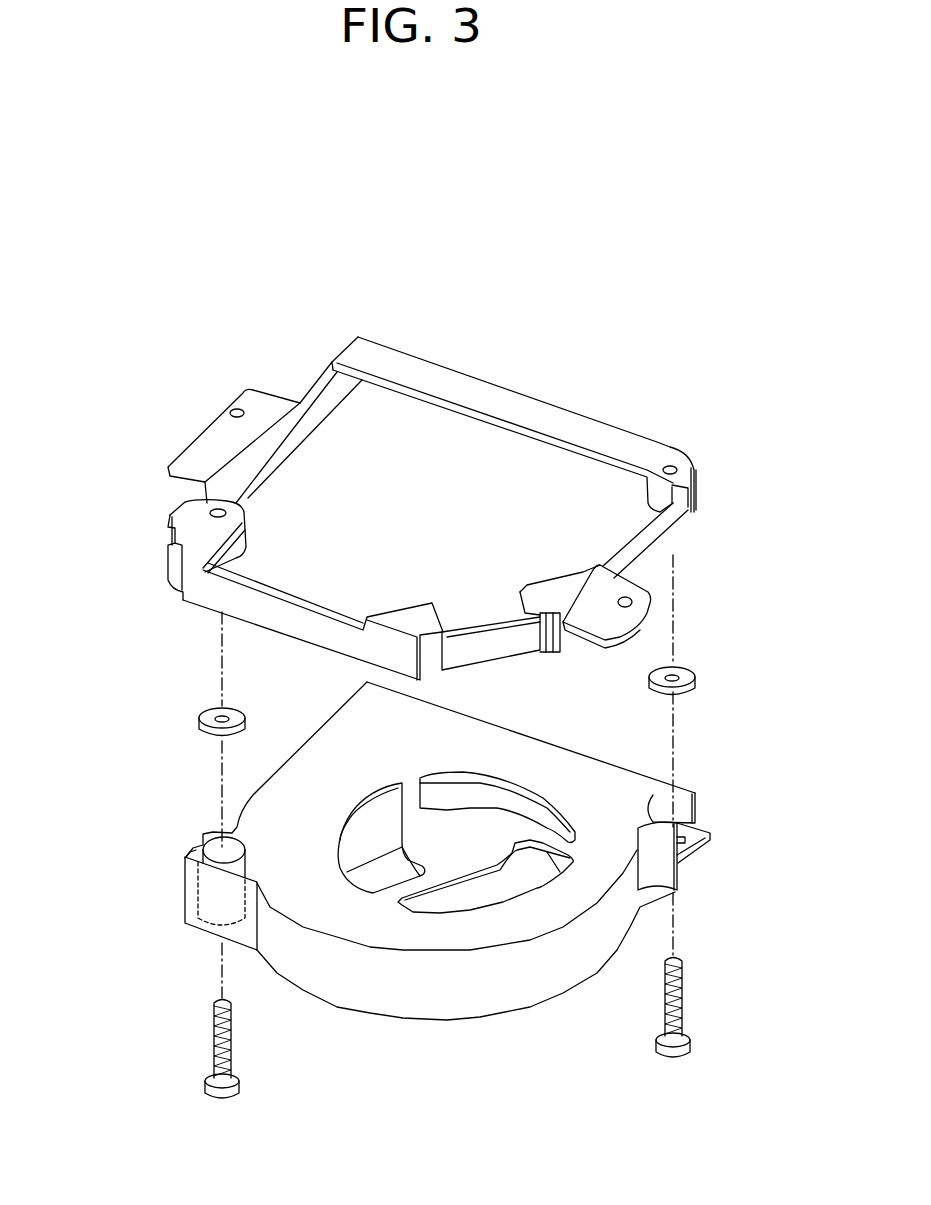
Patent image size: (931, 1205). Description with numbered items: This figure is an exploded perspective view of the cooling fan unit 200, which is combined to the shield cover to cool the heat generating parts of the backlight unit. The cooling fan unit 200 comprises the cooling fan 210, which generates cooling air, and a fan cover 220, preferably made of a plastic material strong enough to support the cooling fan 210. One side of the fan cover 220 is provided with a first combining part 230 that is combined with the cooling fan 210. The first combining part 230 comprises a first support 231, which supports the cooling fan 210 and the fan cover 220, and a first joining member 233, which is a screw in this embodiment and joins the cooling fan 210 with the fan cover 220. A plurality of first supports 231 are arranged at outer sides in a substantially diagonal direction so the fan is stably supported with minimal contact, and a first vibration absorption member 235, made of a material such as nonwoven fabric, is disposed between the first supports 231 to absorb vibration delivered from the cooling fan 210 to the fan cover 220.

The cooling fan unit 200 is at (164, 348).
The cooling fan 210 is at (447, 1021).
The fan cover 220 is at (515, 398).
The first combining part 230 is at (76, 585).
The first support 231 is at (180, 577).
The first joining member 233 is at (212, 1020).
The first vibration absorption member 235 is at (205, 708).